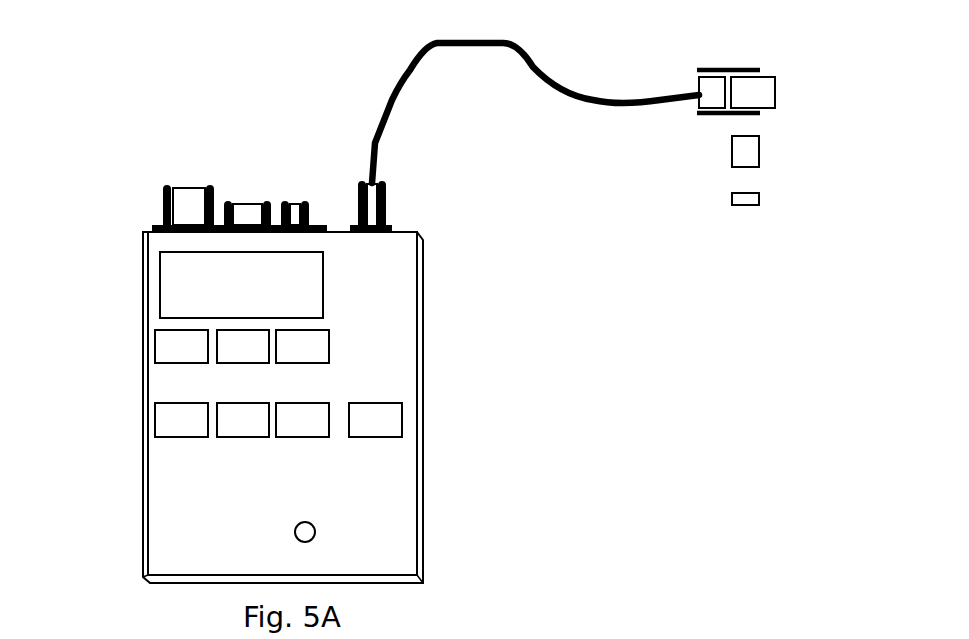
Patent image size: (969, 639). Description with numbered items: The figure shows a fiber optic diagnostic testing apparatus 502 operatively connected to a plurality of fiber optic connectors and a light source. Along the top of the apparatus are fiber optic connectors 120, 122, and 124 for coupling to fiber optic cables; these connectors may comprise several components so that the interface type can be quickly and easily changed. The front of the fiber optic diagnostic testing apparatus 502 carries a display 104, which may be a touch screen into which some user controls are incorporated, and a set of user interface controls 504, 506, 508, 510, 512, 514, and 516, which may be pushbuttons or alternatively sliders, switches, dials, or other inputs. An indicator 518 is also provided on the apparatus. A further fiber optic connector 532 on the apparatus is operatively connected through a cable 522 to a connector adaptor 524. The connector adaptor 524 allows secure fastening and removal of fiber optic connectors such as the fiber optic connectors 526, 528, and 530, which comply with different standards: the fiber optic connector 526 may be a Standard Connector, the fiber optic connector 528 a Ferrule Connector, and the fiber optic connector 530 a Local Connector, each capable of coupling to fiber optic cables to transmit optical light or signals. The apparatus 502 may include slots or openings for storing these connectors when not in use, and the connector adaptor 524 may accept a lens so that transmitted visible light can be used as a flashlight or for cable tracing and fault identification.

The display 104 is at (160, 290).
The fiber optic connector 120 is at (190, 187).
The fiber optic connector 122 is at (250, 203).
The fiber optic connector 124 is at (293, 203).
The fiber optic diagnostic testing apparatus 502 is at (143, 455).
The user interface control 504 is at (181, 346).
The user interface control 506 is at (243, 346).
The user interface control 508 is at (302, 346).
The user interface control 510 is at (181, 420).
The user interface control 512 is at (243, 420).
The user interface control 514 is at (302, 420).
The user interface control 516 is at (375, 420).
The indicator 518 is at (315, 528).
The cable 522 is at (623, 100).
The connector adaptor 524 is at (720, 68).
The fiber optic connector 526 is at (775, 85).
The fiber optic connector 528 is at (759, 140).
The fiber optic connector 530 is at (759, 193).
The fiber optic connector 532 is at (387, 200).